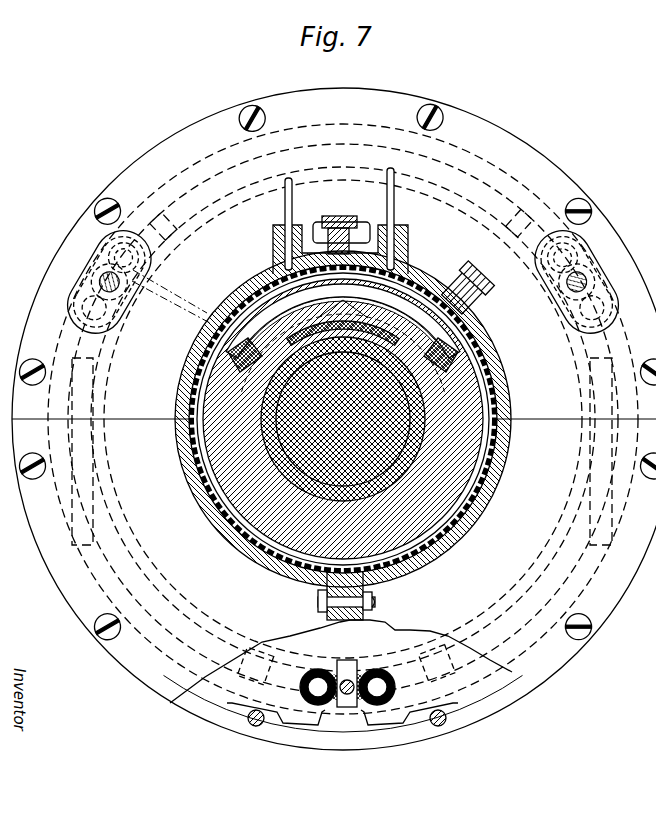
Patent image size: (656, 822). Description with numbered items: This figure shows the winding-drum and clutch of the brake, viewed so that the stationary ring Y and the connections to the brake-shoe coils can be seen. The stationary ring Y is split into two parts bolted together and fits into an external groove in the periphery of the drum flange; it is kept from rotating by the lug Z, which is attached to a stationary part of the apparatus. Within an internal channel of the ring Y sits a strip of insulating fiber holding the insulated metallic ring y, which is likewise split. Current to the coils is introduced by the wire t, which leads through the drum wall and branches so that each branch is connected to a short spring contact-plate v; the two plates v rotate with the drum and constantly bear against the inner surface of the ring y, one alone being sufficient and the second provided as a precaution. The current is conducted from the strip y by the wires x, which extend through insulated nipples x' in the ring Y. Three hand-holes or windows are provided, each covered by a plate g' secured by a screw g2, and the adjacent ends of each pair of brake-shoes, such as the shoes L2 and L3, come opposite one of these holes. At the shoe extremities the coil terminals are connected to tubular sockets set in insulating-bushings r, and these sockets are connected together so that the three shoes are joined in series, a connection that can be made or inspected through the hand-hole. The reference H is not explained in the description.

The stationary ring Y is at (507, 448).
The insulated metallic ring y is at (182, 401).
The spring contact-plate v is at (198, 360).
The wires x is at (339, 219).
The insulated nipples x' is at (341, 249).
The lug Z is at (475, 273).
The wire t is at (182, 298).
The plate g' is at (342, 286).
The screw g2 is at (110, 282).
The horizontal reference H is at (322, 156).
The brake-shoe L2 is at (264, 666).
The brake-shoe L3 is at (426, 664).
The insulating-bushing r is at (318, 706).